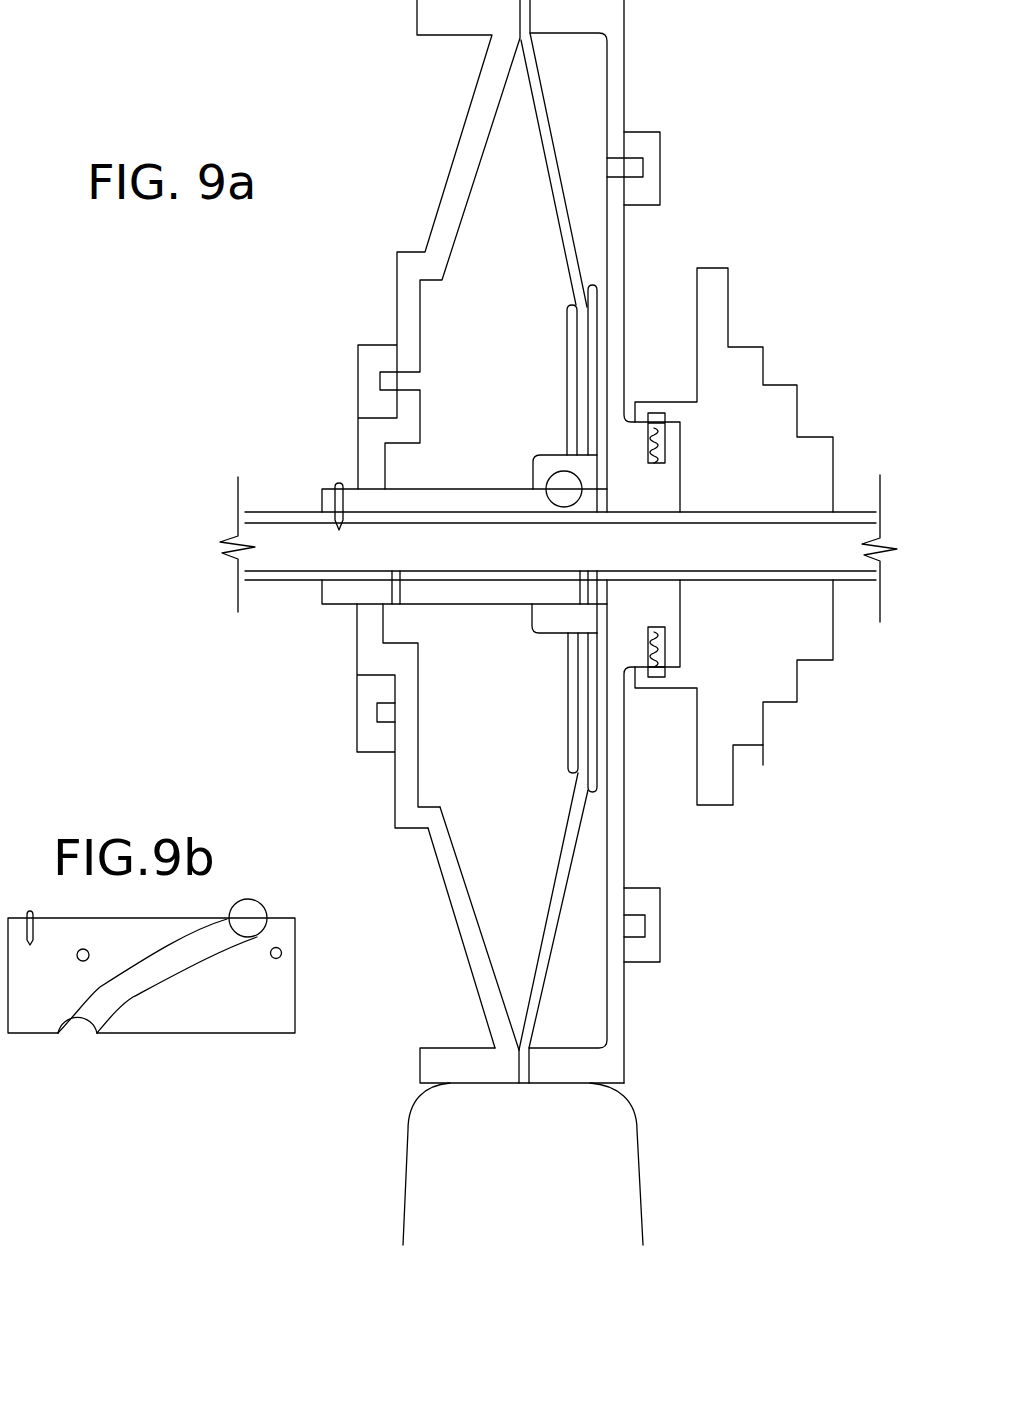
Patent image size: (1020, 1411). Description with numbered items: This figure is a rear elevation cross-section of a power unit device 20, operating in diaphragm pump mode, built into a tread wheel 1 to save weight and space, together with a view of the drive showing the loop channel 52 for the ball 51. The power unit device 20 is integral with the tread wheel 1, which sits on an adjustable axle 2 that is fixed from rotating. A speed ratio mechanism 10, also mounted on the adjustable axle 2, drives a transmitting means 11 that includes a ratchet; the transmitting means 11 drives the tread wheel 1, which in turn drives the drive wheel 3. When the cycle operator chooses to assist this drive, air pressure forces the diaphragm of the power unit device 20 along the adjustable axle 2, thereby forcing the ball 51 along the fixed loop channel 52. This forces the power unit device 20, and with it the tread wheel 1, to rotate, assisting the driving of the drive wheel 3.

In FIG. 9A, the tread wheel 1 is at (630, 997).
In FIG. 9A, the adjustable axle 2 is at (308, 587).
In FIG. 9A, the drive wheel 3 is at (645, 1173).
In FIG. 9A, the speed ratio mechanism 10 is at (771, 737).
In FIG. 9A, the transmitting means 11 is at (653, 692).
In FIG. 9A, the power unit device 20 is at (570, 773).
In FIG. 9A, the ball 51 is at (553, 467).
In FIG. 9B, the ball 51 is at (257, 898).
In FIG. 9B, the loop channel 52 is at (80, 1038).